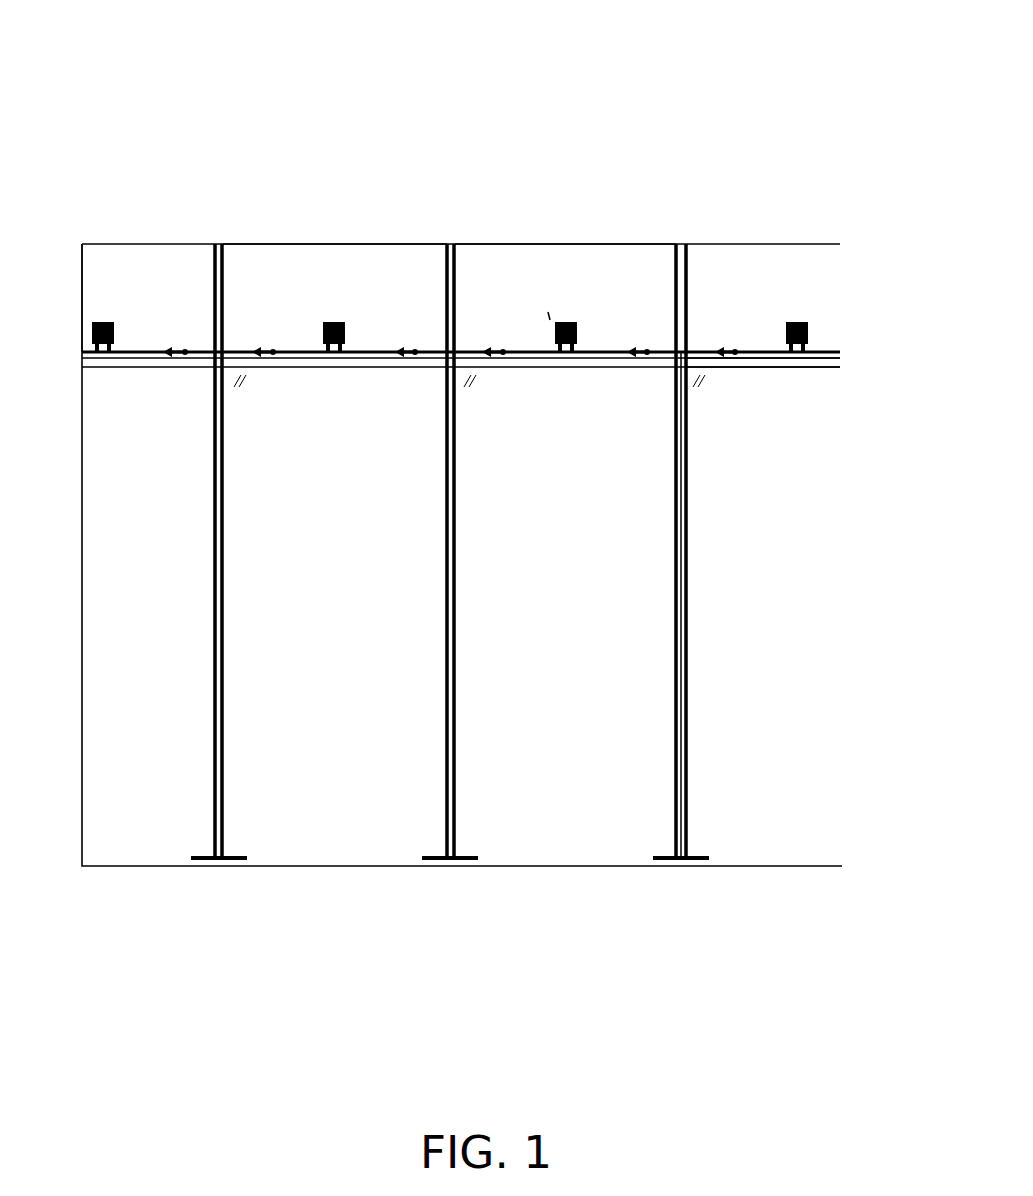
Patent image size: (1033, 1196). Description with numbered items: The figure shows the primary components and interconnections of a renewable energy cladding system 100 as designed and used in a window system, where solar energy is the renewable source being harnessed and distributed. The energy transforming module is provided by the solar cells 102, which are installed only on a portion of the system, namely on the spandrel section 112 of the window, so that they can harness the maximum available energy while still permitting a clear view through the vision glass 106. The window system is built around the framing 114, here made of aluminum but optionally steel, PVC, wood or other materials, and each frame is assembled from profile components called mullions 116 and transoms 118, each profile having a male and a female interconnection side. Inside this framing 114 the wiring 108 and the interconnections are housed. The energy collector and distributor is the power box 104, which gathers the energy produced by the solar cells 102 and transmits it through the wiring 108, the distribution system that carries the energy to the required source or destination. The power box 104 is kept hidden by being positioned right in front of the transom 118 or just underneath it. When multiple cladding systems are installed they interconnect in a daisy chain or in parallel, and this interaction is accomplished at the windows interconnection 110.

The renewable energy cladding system 100 is at (103, 90).
The solar cell 102 is at (258, 268).
The power box 104 is at (340, 330).
The vision glass 106 is at (360, 557).
The wiring 108 is at (688, 590).
The windows interconnection 110 is at (680, 858).
The spandrel section 112 is at (588, 305).
The framing 114 is at (447, 830).
The mullion 116 is at (217, 763).
The transom 118 is at (830, 365).